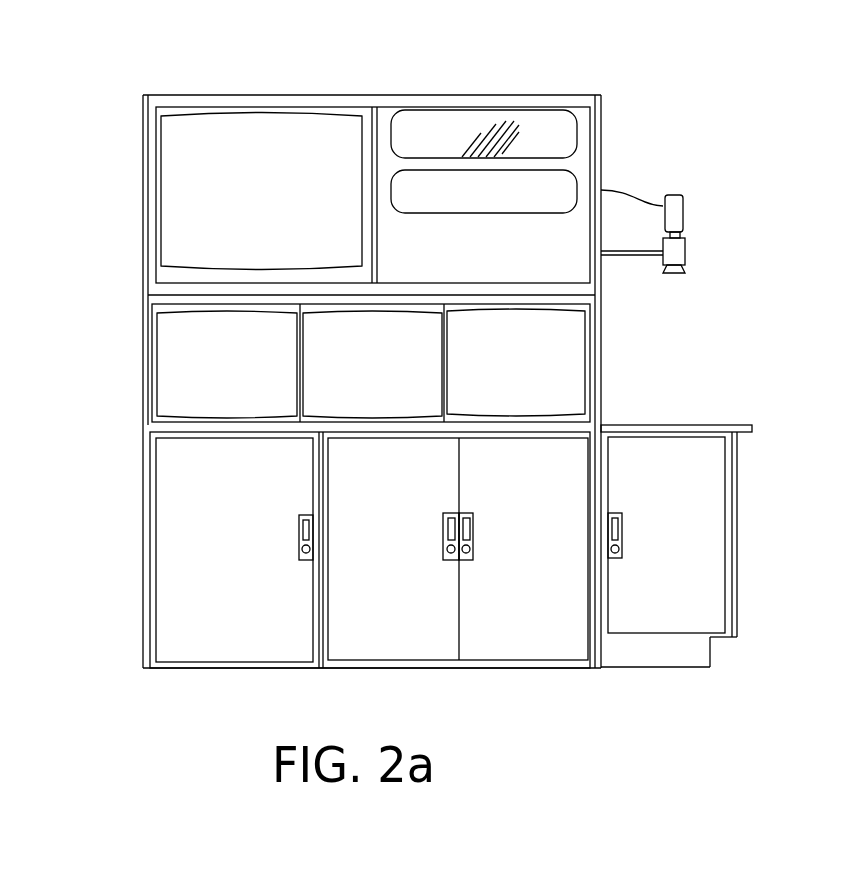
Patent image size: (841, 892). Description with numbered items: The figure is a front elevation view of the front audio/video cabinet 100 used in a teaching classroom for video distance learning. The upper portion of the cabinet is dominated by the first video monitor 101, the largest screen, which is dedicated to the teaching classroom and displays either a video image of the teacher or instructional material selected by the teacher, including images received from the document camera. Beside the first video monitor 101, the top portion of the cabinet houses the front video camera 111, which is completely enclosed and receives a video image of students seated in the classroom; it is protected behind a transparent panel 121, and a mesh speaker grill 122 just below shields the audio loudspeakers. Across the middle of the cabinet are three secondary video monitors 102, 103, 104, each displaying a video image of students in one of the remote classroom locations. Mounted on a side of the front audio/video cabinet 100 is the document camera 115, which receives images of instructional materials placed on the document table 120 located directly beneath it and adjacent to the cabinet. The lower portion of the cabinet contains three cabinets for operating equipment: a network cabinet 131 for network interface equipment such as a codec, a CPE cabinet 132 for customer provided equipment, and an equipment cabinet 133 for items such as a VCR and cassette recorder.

The front audio/video cabinet 100 is at (300, 83).
The first video monitor 101 is at (181, 166).
The front video camera 111 is at (421, 124).
The transparent panel 121 is at (578, 124).
The mesh speaker grill 122 is at (578, 184).
The document camera 115 is at (686, 218).
The video monitor 102 is at (183, 400).
The video monitor 103 is at (320, 355).
The video monitor 104 is at (565, 341).
The document table 120 is at (690, 425).
The network cabinet 131 is at (185, 562).
The CPE cabinet 132 is at (503, 647).
The equipment cabinet 133 is at (712, 543).